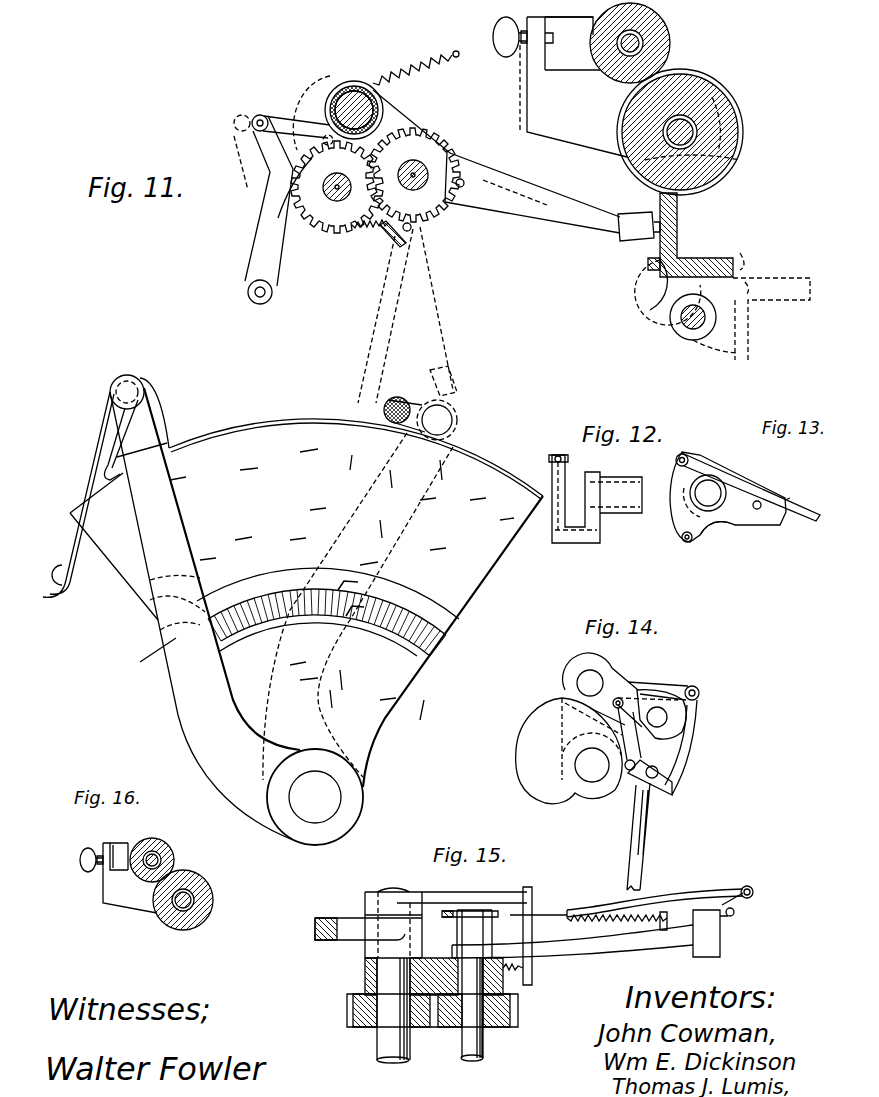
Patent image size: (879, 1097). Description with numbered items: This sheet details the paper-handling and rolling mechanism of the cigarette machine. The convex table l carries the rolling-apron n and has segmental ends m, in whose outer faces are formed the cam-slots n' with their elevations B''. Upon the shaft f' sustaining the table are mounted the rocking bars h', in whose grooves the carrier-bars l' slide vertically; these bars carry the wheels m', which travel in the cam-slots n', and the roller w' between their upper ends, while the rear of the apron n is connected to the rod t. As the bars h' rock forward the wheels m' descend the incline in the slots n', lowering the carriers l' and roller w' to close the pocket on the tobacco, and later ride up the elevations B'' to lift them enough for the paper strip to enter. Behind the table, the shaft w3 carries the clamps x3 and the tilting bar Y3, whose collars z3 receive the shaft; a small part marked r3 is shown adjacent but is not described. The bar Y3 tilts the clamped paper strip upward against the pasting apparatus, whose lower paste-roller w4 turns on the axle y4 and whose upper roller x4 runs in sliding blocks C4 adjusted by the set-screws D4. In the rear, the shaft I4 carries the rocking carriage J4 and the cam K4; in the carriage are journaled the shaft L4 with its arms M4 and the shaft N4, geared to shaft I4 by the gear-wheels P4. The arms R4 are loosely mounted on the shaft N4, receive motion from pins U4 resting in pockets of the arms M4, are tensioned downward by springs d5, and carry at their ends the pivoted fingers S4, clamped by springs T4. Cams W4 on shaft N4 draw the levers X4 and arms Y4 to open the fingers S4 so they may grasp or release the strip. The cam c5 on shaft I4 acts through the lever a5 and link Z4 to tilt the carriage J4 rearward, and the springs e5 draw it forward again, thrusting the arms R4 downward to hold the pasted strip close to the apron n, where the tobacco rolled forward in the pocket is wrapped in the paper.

In FIG. 11, the shaft I4 is at (337, 187).
In FIG. 14, the shaft I4 is at (592, 757).
In FIG. 15, the shaft I4 is at (411, 1010).
In FIG. 11, the shaft N4 is at (413, 175).
In FIG. 13, the shaft N4 is at (704, 496).
In FIG. 14, the shaft N4 is at (652, 714).
In FIG. 15, the shaft N4 is at (472, 985).
In FIG. 11, the shaft L4 is at (354, 110).
In FIG. 14, the shaft L4 is at (600, 689).
In FIG. 11, the rocking carriage J4 is at (313, 113).
In FIG. 15, the rocking carriage J4 is at (366, 966).
In FIG. 11, the springs e5 is at (416, 67).
In FIG. 11, the arm or link Z4 is at (282, 118).
In FIG. 11, the lever a5 is at (263, 210).
In FIG. 15, the lever a5 is at (368, 929).
In FIG. 11, the cam c5 is at (295, 200).
In FIG. 11, the springs d5 is at (381, 234).
In FIG. 11, the gear-wheels P4 is at (390, 211).
In FIG. 15, the gear-wheels P4 is at (429, 1010).
In FIG. 11, the arms M4 is at (496, 158).
In FIG. 14, the arms M4 is at (630, 732).
In FIG. 15, the arms M4 is at (446, 916).
In FIG. 11, the pins U4 is at (469, 184).
In FIG. 13, the pins U4 is at (765, 507).
In FIG. 14, the pins U4 is at (643, 763).
In FIG. 15, the pins U4 is at (535, 926).
In FIG. 11, the arms R4 is at (489, 277).
In FIG. 13, the arms R4 is at (718, 527).
In FIG. 14, the arms R4 is at (634, 836).
In FIG. 15, the arms R4 is at (572, 950).
In FIG. 11, the fingers S4 is at (540, 304).
In FIG. 15, the fingers S4 is at (724, 925).
In FIG. 11, the set-screws D4 is at (560, 87).
In FIG. 16, the set-screws D4 is at (113, 875).
In FIG. 11, the sliding blocks C4 is at (580, 57).
In FIG. 16, the sliding blocks C4 is at (119, 856).
In FIG. 11, the upper roller x4 is at (662, 36).
In FIG. 16, the upper roller x4 is at (159, 860).
In FIG. 11, the axle y4 is at (742, 141).
In FIG. 11, the lower roller w4 is at (692, 145).
In FIG. 16, the lower roller w4 is at (232, 893).
In FIG. 11, the bar Y3 is at (690, 235).
In FIG. 11, the clamps x3 is at (668, 292).
In FIG. 11, the collars z3 is at (751, 319).
In FIG. 11, the shaft w3 is at (693, 317).
In FIG. 11, the bracket parts r3 is at (754, 273).
In FIG. 11, the segmental ends m is at (356, 603).
In FIG. 11, the cam-slots n' is at (327, 616).
In FIG. 11, the projections or elevations B'' is at (359, 605).
In FIG. 11, the rocking bars h' is at (205, 614).
In FIG. 11, the shaft f' is at (315, 797).
In FIG. 11, the roller w' is at (283, 407).
In FIG. 11, the rolling-apron n is at (234, 488).
In FIG. 11, the bars l' is at (135, 440).
In FIG. 11, the convex table l is at (216, 413).
In FIG. 11, the rod t is at (123, 567).
In FIG. 11, the wheels m' is at (177, 602).
In FIG. 12, the levers X4 is at (595, 499).
In FIG. 13, the levers X4 is at (716, 497).
In FIG. 14, the levers X4 is at (663, 683).
In FIG. 15, the levers X4 is at (463, 922).
In FIG. 13, the cams W4 is at (712, 472).
In FIG. 14, the cams W4 is at (695, 718).
In FIG. 15, the cams W4 is at (480, 952).
In FIG. 13, the arms Y4 is at (782, 480).
In FIG. 14, the arms Y4 is at (663, 747).
In FIG. 15, the arms Y4 is at (660, 901).
In FIG. 14, the cam K4 is at (569, 751).
In FIG. 15, the springs T4 is at (617, 927).